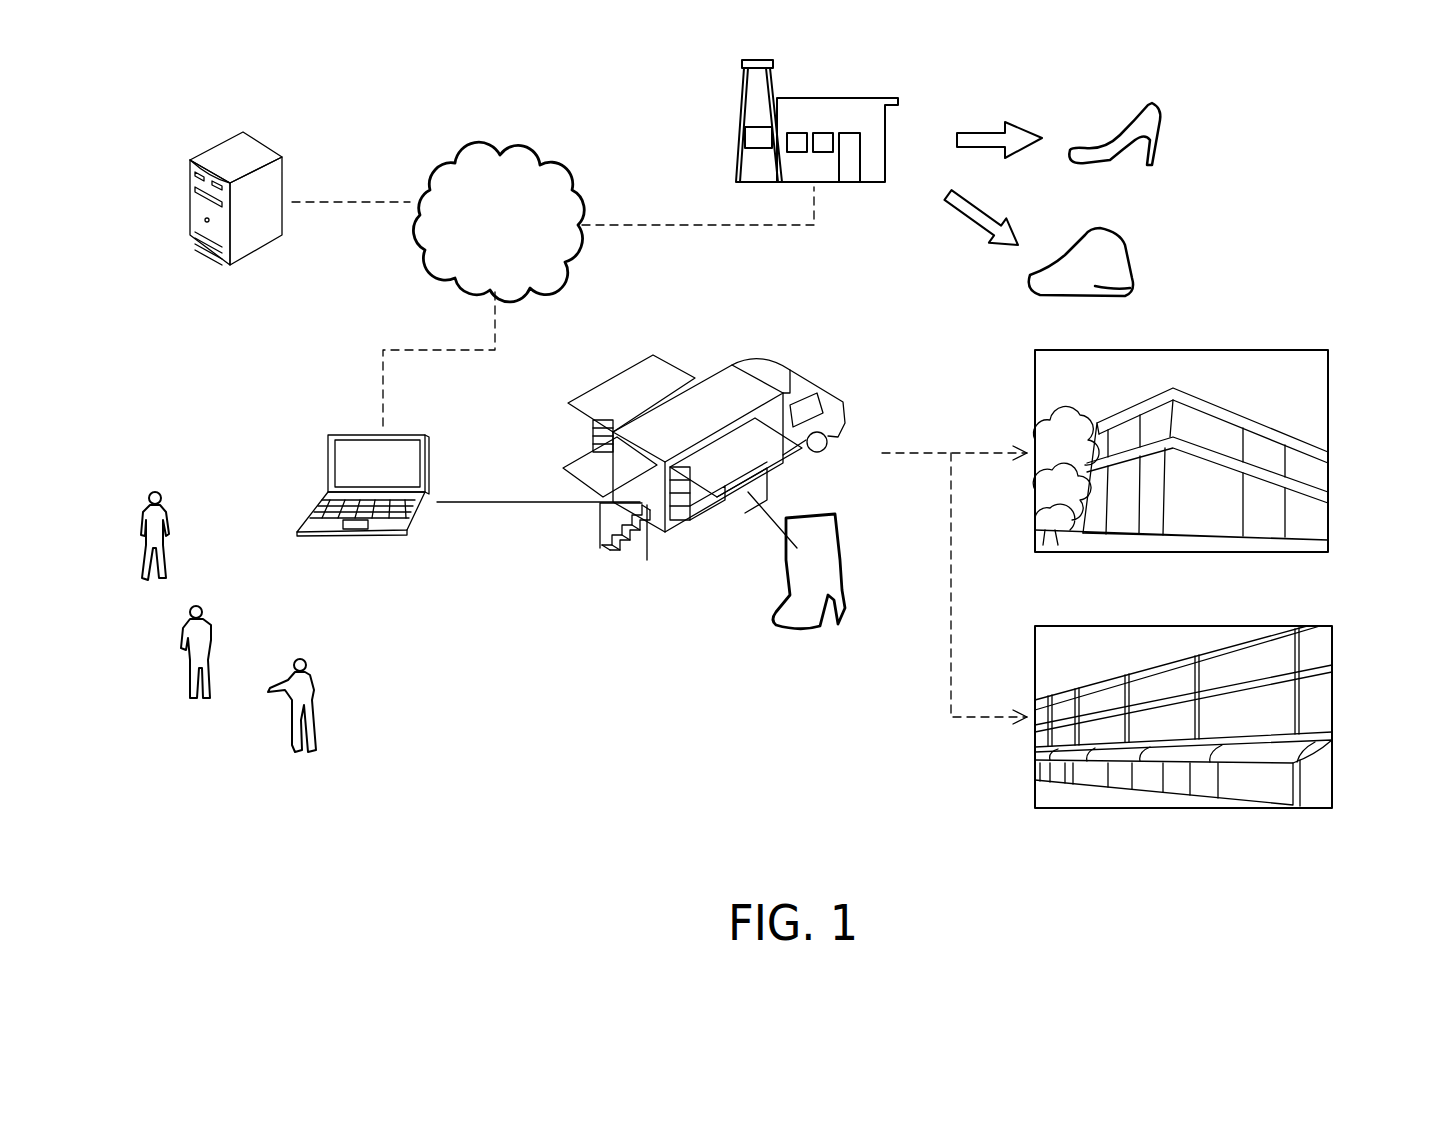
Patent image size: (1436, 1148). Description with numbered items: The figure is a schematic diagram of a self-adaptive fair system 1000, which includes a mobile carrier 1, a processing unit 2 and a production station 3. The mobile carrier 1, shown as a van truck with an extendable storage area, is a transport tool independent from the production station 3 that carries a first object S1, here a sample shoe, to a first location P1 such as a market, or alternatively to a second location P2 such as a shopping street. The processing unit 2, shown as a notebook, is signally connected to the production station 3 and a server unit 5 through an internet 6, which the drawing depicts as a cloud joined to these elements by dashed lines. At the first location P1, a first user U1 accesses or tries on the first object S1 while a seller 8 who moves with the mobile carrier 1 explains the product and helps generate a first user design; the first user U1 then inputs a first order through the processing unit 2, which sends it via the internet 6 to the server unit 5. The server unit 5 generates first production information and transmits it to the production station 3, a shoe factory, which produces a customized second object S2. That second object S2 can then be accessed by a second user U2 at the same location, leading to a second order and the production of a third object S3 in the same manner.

The self-adaptive fair system 1000 is at (1318, 148).
The mobile carrier 1 is at (828, 395).
The processing unit 2 is at (427, 463).
The production station 3 is at (877, 97).
The server unit 5 is at (282, 175).
The internet 6 is at (570, 190).
The seller 8 is at (305, 753).
The first user U1 is at (192, 700).
The second user U2 is at (155, 492).
The first object S1 is at (845, 535).
The second object S2 is at (1160, 118).
The third object S3 is at (1130, 240).
The first location P1 is at (1330, 433).
The second location P2 is at (1332, 648).